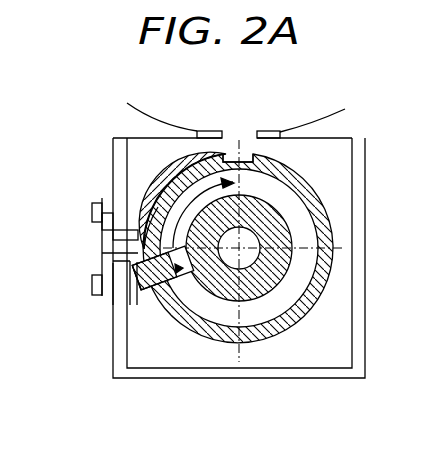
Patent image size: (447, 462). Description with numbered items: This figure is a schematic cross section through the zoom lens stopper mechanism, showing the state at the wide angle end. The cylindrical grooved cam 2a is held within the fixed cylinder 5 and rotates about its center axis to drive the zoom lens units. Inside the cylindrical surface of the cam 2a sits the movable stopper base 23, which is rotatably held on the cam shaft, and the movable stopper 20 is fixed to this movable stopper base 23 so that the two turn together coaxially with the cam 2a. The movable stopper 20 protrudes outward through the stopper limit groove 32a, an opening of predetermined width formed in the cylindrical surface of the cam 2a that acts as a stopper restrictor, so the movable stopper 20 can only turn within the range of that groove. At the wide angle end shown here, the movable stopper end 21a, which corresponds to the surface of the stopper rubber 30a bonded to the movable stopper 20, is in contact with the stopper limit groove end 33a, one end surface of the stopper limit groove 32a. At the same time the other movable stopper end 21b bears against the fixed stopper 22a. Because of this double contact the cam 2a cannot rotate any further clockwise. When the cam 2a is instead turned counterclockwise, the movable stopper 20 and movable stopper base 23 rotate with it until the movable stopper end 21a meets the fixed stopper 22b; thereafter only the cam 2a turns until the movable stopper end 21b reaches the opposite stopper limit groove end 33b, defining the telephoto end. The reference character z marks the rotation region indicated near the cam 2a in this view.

The cam 2a is at (273, 160).
The fixed cylinder 5 is at (330, 132).
The movable stopper 20 is at (227, 337).
The movable stopper end 21a is at (145, 290).
The movable stopper end 21b is at (92, 217).
The fixed stopper 22a is at (103, 253).
The fixed stopper 22b is at (107, 229).
The movable stopper base 23 is at (273, 283).
The stopper rubber 30a is at (100, 293).
The stopper limit groove 32a is at (158, 207).
The stopper limit groove end 33a is at (147, 287).
The stopper limit groove end 33b is at (165, 187).
The eccentric portion z is at (190, 170).